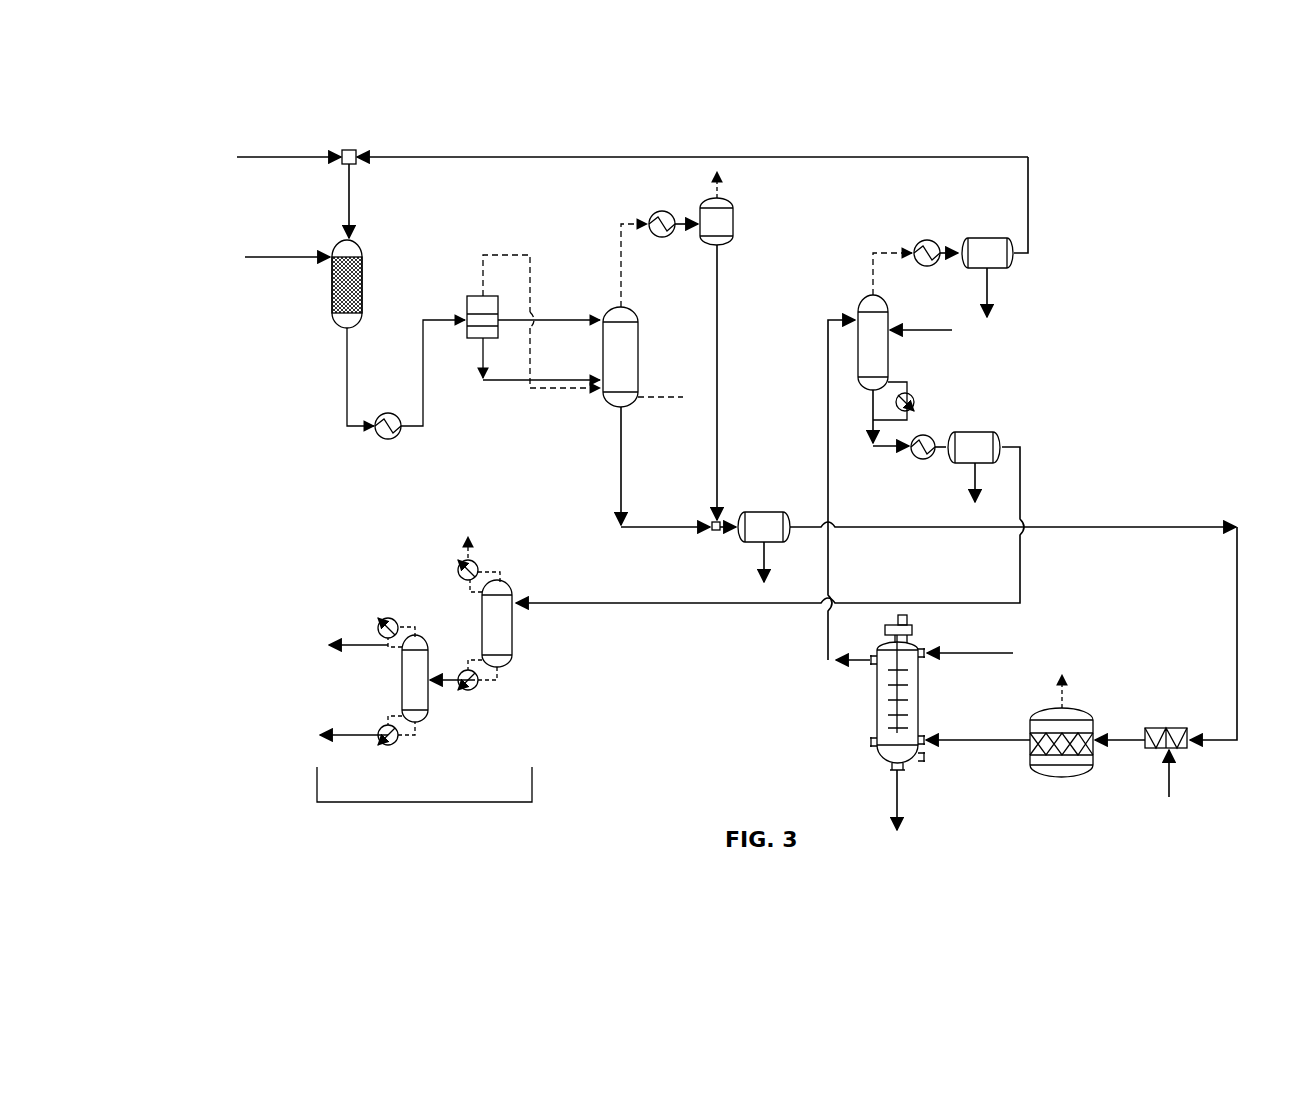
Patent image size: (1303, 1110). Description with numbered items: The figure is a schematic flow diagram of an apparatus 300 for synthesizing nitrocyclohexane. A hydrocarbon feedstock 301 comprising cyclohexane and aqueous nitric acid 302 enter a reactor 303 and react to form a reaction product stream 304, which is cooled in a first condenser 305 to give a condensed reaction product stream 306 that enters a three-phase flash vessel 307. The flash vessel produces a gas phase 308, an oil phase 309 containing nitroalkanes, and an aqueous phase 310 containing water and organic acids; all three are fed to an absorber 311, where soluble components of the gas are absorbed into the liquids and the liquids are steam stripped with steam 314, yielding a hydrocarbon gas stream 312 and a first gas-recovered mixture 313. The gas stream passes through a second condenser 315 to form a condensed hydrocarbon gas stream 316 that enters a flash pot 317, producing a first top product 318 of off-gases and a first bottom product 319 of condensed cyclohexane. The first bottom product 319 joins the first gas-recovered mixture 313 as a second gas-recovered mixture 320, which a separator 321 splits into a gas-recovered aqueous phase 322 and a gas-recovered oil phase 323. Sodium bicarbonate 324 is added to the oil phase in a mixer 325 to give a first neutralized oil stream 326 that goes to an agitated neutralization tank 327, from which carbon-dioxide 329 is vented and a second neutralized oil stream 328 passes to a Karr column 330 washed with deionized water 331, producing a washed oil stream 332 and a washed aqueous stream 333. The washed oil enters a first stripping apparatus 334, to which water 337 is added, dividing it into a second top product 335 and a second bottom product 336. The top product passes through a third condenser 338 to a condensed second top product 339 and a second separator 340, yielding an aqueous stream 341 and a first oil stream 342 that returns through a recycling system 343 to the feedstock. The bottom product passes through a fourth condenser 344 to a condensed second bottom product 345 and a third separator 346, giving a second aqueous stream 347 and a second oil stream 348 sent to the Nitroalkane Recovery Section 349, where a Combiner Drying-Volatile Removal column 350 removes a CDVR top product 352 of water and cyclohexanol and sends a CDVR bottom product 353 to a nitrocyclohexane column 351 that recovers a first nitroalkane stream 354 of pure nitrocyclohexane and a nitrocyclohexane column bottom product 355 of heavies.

The apparatus 300 is at (240, 102).
The hydrocarbon feedstock 301 is at (347, 186).
The aqueous nitric acid 302 is at (279, 256).
The reactor 303 is at (360, 247).
The reaction product stream 304 is at (347, 383).
The first condenser 305 is at (384, 440).
The condensed reaction product stream 306 is at (424, 414).
The three-phase flash vessel 307 is at (480, 295).
The gas phase 308 is at (483, 253).
The oil phase 309 is at (505, 318).
The aqueous phase 310 is at (483, 350).
The absorber 311 is at (612, 306).
The hydrocarbon gas stream 312 is at (624, 280).
The first gas-recovered mixture 313 is at (622, 455).
The steam 314 is at (658, 396).
The second condenser 315 is at (660, 210).
The condensed hydrocarbon gas stream 316 is at (684, 227).
The flash pot 317 is at (734, 228).
The first top product 318 is at (722, 185).
The first bottom product 319 is at (718, 405).
The second gas-recovered mixture 320 is at (722, 520).
The separator 321 is at (772, 512).
The gas-recovered aqueous phase 322 is at (762, 565).
The gas-recovered oil phase 323 is at (810, 530).
The sodium bicarbonate 324 is at (1169, 770).
The mixer 325 is at (1168, 728).
The first neutralized oil stream 326 is at (1110, 738).
The neutralization tank 327 is at (1046, 715).
The second neutralized oil stream 328 is at (960, 745).
The carbon-dioxide 329 is at (1064, 690).
The Karr column 330 is at (918, 715).
The deionized water 331 is at (980, 653).
The washed oil stream 332 is at (842, 667).
The washed aqueous stream 333 is at (898, 810).
The first stripping apparatus 334 is at (868, 295).
The second top product 335 is at (878, 252).
The second bottom product 336 is at (868, 440).
The water 337 is at (910, 328).
The third condenser 338 is at (925, 240).
The condensed second top product 339 is at (943, 250).
The second separator 340 is at (983, 238).
The aqueous stream 341 is at (990, 290).
The first oil stream 342 is at (1029, 232).
The recycling system 343 is at (352, 148).
The fourth condenser 344 is at (918, 460).
The condensed second bottom product 345 is at (942, 452).
The third separator 346 is at (965, 432).
The second aqueous stream 347 is at (976, 478).
The second oil stream 348 is at (1022, 460).
The Nitroalkane Recovery Section 349 is at (424, 802).
The Combiner Drying-Volatile Removal column 350 is at (508, 580).
The nitrocyclohexane column 351 is at (426, 636).
The CDVR top product 352 is at (470, 545).
The CDVR bottom product 353 is at (447, 682).
The first nitroalkane stream 354 is at (360, 645).
The nitrocyclohexane column bottom product 355 is at (360, 735).